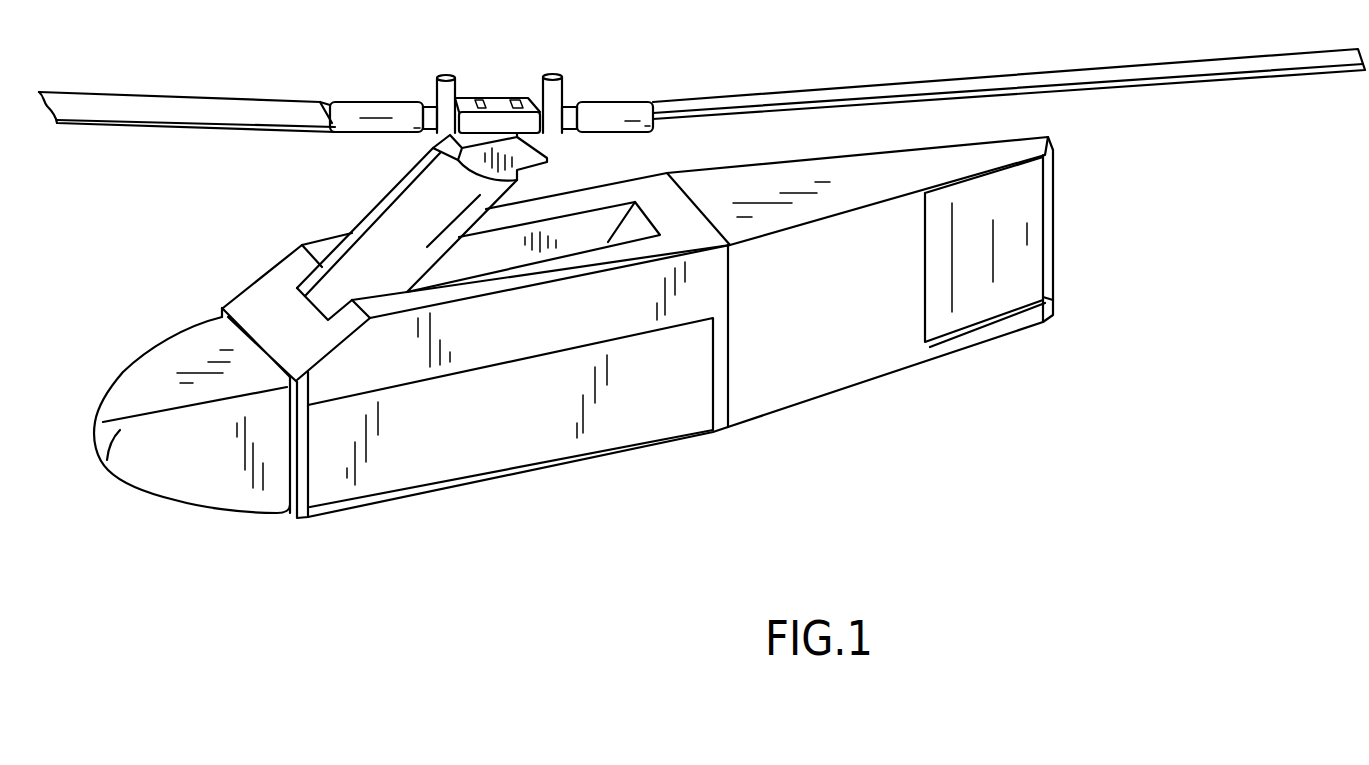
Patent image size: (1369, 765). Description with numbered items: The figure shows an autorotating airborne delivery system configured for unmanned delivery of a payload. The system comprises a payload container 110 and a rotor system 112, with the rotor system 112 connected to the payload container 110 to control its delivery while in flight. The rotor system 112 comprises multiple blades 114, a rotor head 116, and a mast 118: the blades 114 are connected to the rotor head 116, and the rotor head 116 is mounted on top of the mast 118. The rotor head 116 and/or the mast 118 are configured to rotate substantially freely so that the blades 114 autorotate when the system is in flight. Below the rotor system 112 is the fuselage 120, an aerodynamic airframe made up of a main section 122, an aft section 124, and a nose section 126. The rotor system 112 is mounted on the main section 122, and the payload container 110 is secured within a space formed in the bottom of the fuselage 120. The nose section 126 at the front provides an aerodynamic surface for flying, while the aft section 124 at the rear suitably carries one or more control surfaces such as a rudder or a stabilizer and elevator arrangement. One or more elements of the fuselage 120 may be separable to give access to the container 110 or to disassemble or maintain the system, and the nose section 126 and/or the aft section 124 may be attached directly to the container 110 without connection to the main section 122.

The payload container 110 is at (618, 430).
The rotor system 112 is at (627, 98).
The blades 114 is at (857, 87).
The rotor head 116 is at (485, 97).
The mast 118 is at (392, 192).
The fuselage 120 is at (275, 283).
The main section 122 is at (600, 183).
The aft section 124 is at (810, 397).
The nose section 126 is at (153, 495).